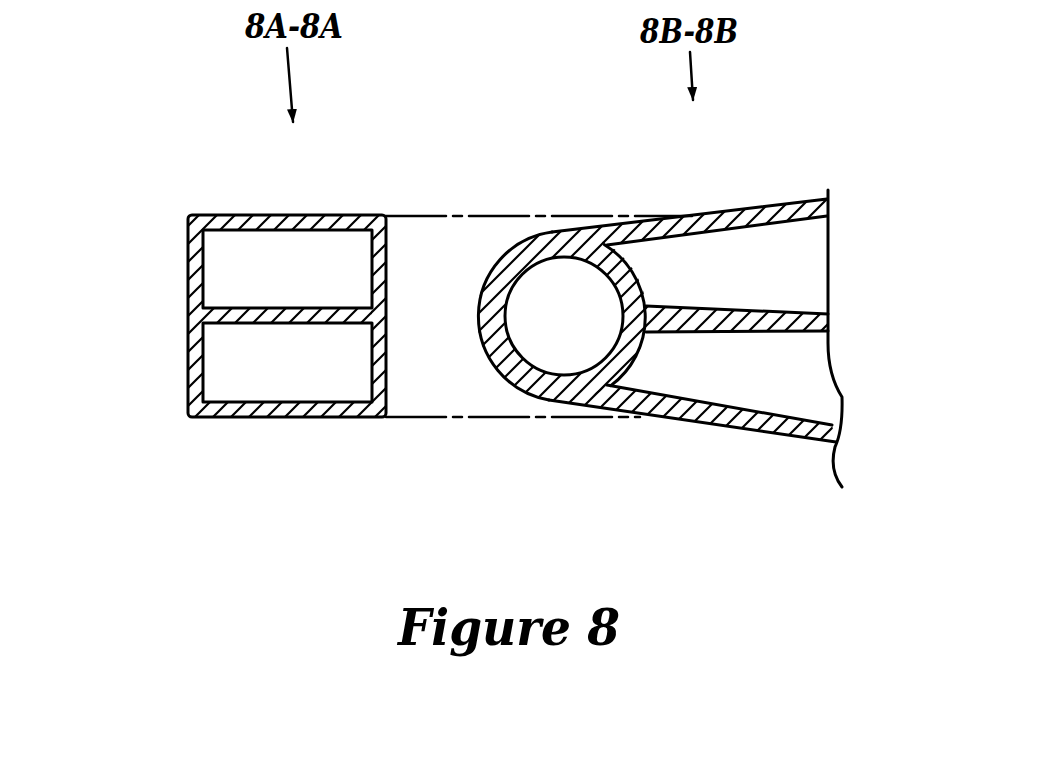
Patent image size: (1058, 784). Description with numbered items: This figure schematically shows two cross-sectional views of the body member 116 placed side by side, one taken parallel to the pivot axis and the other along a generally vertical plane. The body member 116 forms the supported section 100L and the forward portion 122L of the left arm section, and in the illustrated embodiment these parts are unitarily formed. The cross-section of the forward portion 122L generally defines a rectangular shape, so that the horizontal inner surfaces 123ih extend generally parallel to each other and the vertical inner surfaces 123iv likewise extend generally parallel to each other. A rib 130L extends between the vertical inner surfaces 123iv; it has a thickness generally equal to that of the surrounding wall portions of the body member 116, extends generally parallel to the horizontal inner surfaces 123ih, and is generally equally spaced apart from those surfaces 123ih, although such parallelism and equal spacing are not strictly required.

The body member 116 is at (348, 211).
The rib 130L is at (255, 308).
The forward portion 122L is at (188, 363).
The supported section 100L is at (558, 390).
The horizontal inner surfaces 123ih is at (365, 267).
The vertical inner surfaces 123iv is at (278, 237).